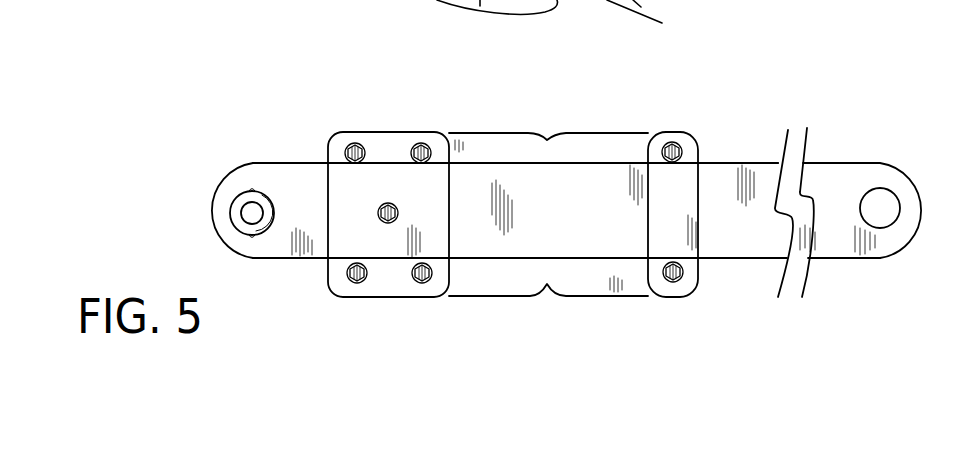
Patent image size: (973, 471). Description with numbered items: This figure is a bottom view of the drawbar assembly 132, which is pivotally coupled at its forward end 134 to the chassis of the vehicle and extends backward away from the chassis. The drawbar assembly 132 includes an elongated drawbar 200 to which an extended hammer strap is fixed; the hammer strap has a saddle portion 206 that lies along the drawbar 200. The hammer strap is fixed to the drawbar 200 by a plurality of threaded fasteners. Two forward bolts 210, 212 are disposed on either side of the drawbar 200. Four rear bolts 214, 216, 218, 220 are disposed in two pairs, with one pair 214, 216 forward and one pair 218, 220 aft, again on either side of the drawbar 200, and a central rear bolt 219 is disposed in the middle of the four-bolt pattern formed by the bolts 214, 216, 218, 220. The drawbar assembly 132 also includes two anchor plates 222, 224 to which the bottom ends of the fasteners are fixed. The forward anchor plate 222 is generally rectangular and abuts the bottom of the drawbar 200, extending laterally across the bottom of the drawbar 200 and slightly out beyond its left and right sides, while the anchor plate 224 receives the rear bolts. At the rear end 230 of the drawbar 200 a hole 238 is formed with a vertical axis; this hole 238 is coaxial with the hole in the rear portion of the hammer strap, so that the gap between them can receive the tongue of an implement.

The drawbar assembly 132 is at (742, 57).
The forward end 134 is at (835, 259).
The drawbar 200 is at (860, 162).
The saddle portion 206 is at (533, 122).
The forward bolt 210 is at (674, 142).
The forward bolt 212 is at (670, 283).
The rear bolt 214 is at (424, 143).
The rear bolt 216 is at (422, 283).
The rear bolt 218 is at (353, 143).
The central rear bolt 219 is at (388, 203).
The rear bolt 220 is at (350, 283).
The forward anchor plate 222 is at (712, 162).
The anchor plate 224 is at (340, 252).
The rear end 230 is at (205, 212).
The hole 238 is at (262, 197).